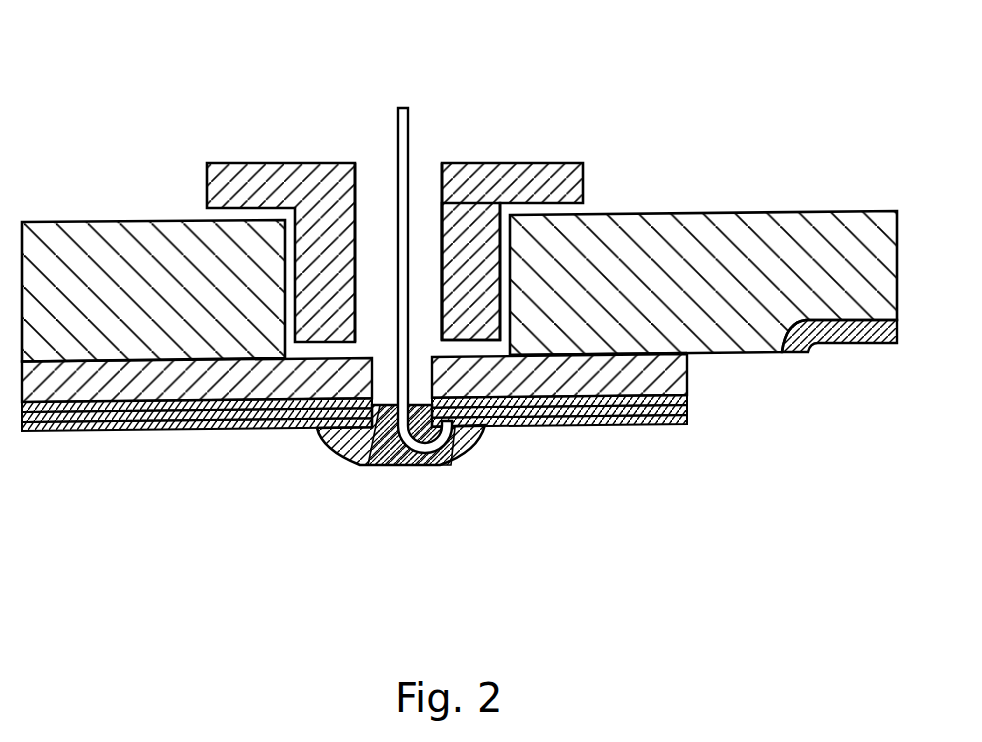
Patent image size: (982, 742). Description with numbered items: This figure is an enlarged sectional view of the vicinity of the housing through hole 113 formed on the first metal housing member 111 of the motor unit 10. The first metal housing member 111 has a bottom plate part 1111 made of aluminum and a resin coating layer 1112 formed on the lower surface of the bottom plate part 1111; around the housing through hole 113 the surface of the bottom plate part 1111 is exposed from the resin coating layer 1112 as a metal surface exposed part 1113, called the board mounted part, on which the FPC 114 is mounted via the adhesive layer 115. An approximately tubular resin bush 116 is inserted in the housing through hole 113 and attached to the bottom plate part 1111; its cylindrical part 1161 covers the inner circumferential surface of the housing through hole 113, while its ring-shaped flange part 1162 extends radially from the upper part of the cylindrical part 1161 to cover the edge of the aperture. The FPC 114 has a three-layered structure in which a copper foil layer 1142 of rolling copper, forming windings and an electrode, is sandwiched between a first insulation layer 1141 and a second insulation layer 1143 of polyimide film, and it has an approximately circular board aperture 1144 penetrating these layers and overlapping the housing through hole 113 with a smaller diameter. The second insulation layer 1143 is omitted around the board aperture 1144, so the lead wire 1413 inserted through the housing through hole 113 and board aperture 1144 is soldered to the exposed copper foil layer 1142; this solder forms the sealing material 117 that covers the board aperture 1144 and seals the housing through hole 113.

The motor unit 10 is at (70, 88).
The first metal housing member 111 is at (738, 165).
The bottom plate part 1111 is at (738, 232).
The resin coating layer 1112 is at (860, 337).
The metal surface exposed part 1113 is at (646, 354).
The housing through hole 113 is at (376, 166).
The FPC 114 is at (190, 554).
The first insulation layer 1141 is at (254, 430).
The copper foil layer 1142 is at (200, 430).
The second insulation layer 1143 is at (128, 430).
The board aperture 1144 is at (368, 466).
The adhesive layer 115 is at (565, 378).
The bush 116 is at (584, 102).
The cylindrical part 1161 is at (487, 250).
The flange part 1162 is at (512, 170).
The sealing material 117 is at (452, 466).
The lead wire 1413 is at (410, 127).